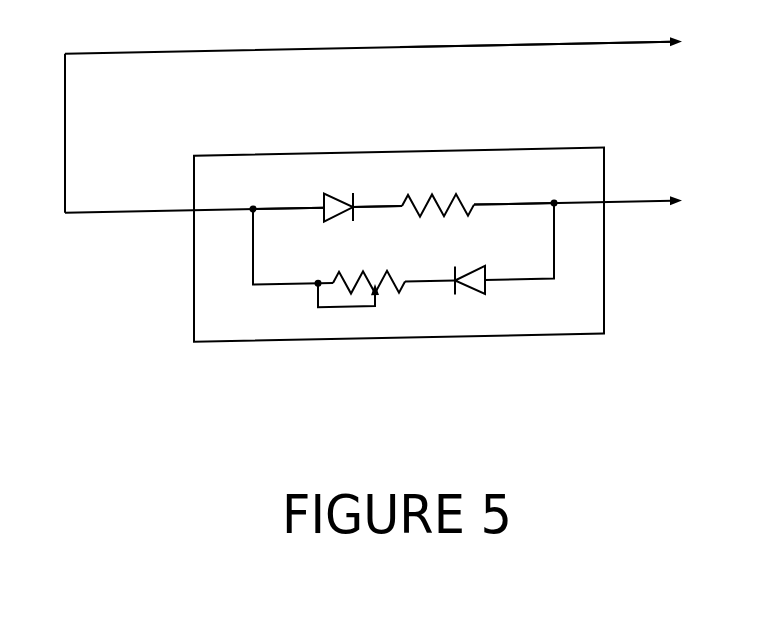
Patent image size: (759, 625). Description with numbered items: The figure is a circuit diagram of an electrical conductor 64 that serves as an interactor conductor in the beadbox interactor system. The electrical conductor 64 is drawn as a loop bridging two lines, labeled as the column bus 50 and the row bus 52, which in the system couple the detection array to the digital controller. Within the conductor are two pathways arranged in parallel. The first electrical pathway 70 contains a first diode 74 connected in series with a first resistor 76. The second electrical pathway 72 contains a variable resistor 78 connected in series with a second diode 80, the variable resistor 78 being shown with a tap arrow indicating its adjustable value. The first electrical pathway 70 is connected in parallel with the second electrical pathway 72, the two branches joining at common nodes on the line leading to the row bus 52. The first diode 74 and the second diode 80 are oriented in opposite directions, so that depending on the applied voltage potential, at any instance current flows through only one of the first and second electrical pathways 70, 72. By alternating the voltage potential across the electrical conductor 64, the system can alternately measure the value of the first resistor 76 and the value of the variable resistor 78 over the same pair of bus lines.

The column bus 50 is at (564, 42).
The row bus 52 is at (396, 202).
The electrical conductor 64 is at (357, 114).
The first electrical pathway 70 is at (382, 186).
The second electrical pathway 72 is at (422, 308).
The first diode 74 is at (323, 194).
The first resistor 76 is at (443, 197).
The variable resistor 78 is at (348, 276).
The second diode 80 is at (478, 264).